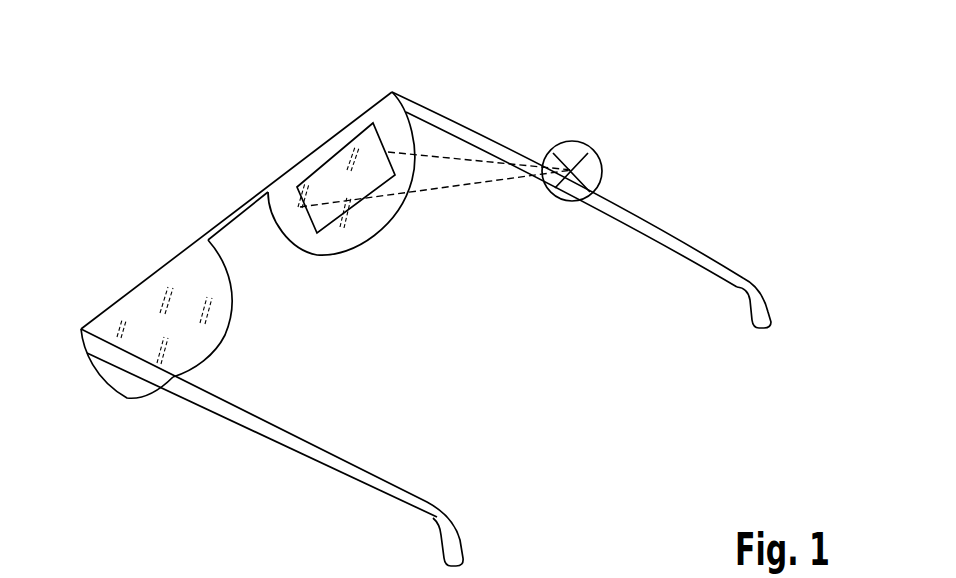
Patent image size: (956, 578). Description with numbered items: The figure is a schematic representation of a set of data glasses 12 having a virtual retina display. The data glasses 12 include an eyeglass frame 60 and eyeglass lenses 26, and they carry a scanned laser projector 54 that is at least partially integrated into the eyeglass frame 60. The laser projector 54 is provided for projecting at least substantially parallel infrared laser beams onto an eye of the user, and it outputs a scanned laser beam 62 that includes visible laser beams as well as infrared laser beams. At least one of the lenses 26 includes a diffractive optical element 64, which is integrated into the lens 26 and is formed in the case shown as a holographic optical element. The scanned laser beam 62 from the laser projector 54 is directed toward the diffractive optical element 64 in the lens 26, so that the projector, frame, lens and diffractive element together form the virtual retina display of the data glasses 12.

The data glasses 12 is at (440, 88).
The eyeglass lenses 26 is at (383, 115).
The diffractive optical element 64 is at (333, 153).
The scanned laser beam 62 is at (457, 190).
The scanned laser projector 54 is at (593, 132).
The eyeglass frame 60 is at (680, 242).